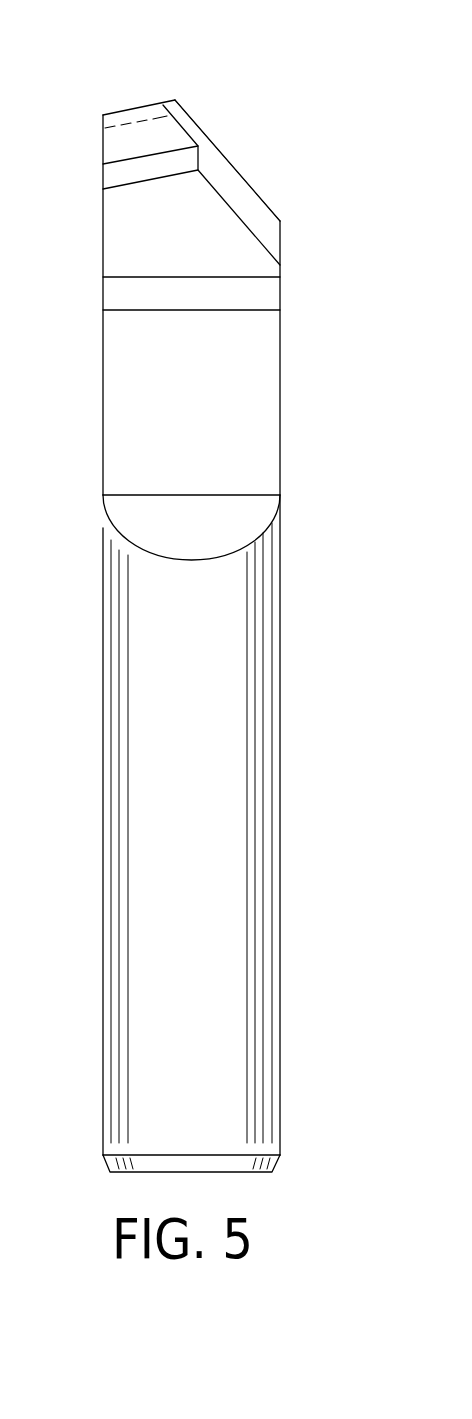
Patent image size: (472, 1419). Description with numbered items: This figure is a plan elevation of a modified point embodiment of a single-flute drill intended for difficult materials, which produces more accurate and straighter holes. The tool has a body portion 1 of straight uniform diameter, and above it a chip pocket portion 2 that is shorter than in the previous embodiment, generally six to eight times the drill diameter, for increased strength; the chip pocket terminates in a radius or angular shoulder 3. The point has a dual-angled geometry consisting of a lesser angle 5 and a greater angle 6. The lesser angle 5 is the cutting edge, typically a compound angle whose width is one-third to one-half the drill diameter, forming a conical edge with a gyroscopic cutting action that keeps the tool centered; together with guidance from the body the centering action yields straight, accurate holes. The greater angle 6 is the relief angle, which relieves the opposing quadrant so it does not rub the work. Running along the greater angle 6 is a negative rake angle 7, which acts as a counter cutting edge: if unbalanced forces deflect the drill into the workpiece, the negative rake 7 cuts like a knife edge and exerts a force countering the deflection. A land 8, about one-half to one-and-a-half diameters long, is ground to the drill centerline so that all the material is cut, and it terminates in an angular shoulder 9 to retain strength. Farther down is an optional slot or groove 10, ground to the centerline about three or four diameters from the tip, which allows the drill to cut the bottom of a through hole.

The body portion 1 is at (179, 882).
The chip pocket portion 2 is at (245, 420).
The radius or angular shoulder 3 is at (243, 517).
The lesser angle 5 is at (138, 110).
The greater angle 6 is at (215, 137).
The negative rake angle 7 is at (237, 192).
The land 8 is at (113, 147).
The angular shoulder 9 is at (117, 180).
The slot or groove 10 is at (117, 297).